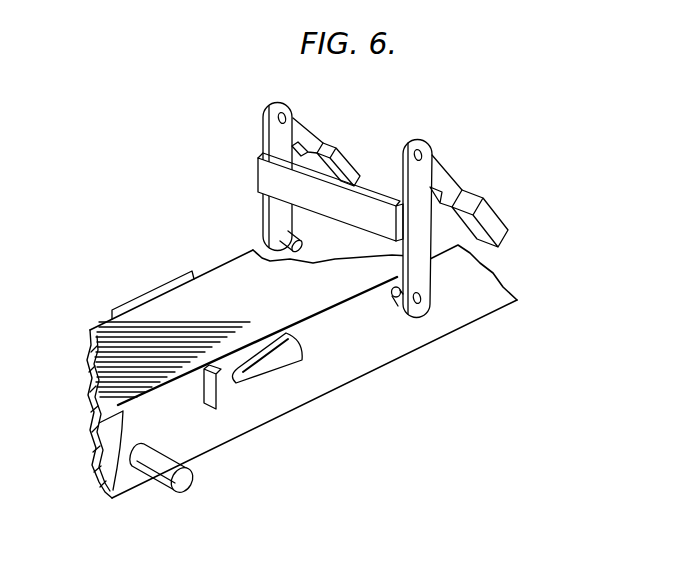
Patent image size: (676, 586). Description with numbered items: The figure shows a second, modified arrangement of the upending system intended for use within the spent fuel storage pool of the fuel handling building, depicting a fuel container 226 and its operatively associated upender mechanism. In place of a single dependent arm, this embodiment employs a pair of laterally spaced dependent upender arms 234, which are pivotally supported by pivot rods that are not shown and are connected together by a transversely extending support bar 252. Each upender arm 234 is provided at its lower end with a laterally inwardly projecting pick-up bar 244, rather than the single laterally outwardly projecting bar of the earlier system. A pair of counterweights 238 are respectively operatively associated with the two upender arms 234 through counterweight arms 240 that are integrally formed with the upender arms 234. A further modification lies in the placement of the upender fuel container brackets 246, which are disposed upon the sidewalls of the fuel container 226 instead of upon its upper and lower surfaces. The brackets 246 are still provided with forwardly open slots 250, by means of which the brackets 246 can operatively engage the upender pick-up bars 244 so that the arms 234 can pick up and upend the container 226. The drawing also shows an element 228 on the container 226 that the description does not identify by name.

The fuel container 226 is at (379, 353).
The pin 228 is at (190, 486).
The dependent upender arms 234 is at (278, 212).
The counterweights 238 is at (355, 168).
The counterweight arms 240 is at (296, 120).
The pick-up bar 244 is at (287, 254).
The upender fuel container brackets 246 is at (147, 298).
The forwardly open slots 250 is at (282, 355).
The support bar 252 is at (345, 209).